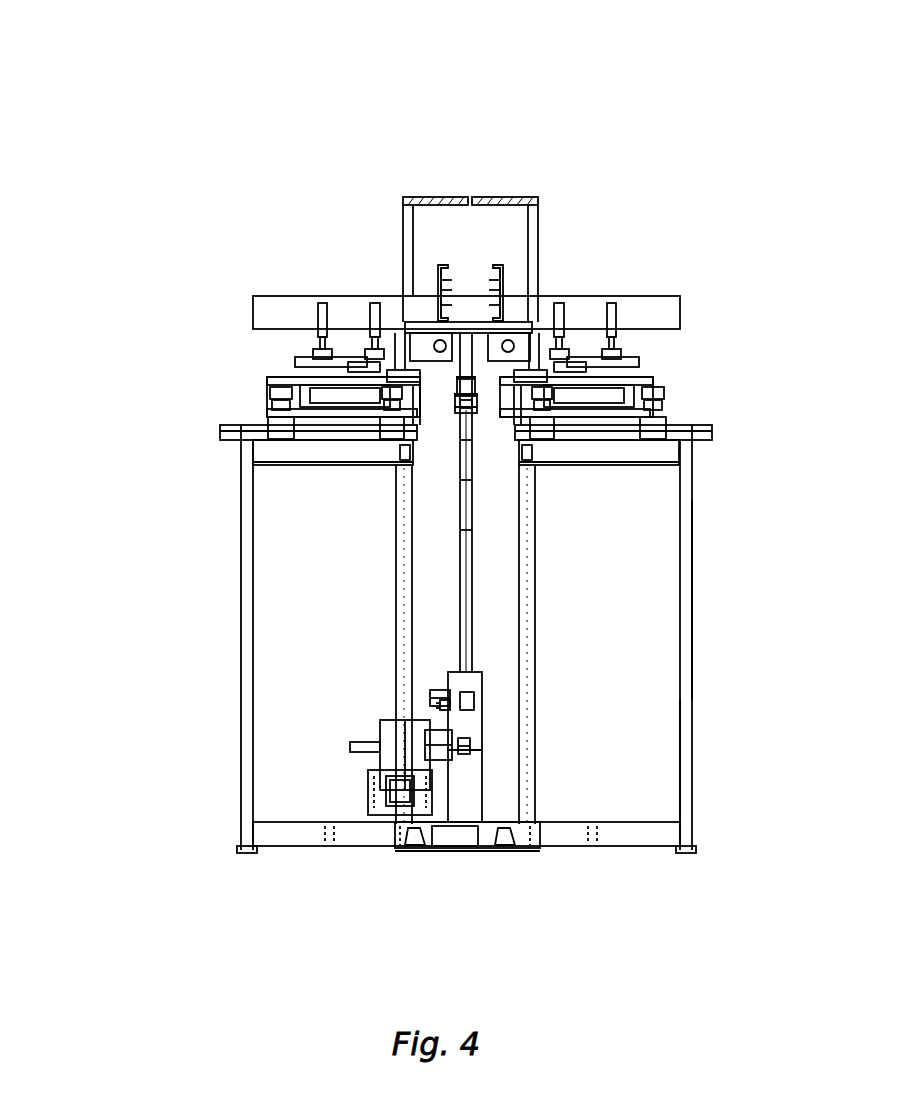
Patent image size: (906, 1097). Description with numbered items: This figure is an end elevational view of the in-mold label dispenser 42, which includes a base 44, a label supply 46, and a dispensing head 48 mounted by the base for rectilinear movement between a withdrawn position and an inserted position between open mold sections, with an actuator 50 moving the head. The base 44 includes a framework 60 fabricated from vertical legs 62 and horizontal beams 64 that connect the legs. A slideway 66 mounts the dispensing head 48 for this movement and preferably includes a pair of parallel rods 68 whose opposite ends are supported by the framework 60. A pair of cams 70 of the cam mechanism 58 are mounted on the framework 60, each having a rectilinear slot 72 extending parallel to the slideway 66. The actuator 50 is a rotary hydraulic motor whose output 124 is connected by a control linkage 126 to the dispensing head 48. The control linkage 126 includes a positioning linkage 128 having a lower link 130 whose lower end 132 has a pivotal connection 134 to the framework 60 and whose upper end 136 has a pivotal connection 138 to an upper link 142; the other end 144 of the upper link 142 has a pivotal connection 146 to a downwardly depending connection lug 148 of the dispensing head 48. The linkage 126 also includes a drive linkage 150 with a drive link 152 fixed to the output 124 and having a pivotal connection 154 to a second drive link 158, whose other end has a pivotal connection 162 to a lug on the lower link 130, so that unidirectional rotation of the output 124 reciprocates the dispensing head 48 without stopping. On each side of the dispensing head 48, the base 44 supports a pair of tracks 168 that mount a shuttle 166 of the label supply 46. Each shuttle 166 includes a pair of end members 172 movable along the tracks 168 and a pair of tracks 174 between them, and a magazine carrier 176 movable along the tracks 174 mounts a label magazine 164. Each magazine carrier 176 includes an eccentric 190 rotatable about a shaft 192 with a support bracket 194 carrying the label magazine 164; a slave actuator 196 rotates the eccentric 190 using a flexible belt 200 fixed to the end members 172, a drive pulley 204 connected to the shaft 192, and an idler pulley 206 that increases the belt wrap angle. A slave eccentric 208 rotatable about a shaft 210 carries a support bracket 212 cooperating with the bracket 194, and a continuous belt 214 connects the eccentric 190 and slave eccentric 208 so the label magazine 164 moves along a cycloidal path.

The in-mold label dispenser 42 is at (704, 160).
The base 44 is at (700, 720).
The label supply 46 is at (236, 136).
The dispensing head 48 is at (434, 340).
The actuator 50 is at (420, 745).
The cam mechanism 58 is at (516, 176).
The framework 60 is at (700, 610).
The vertical legs 62 is at (396, 618).
The horizontal beams 64 is at (340, 447).
The slideway 66 is at (392, 330).
The parallel rods 68 is at (423, 308).
The cam 70 is at (424, 198).
The cam slot 72 is at (455, 206).
The actuator output 124 is at (395, 720).
The control linkage 126 is at (486, 632).
The positioning linkage 128 is at (456, 413).
The lower link 130 is at (465, 535).
The lower end of lower link 132 is at (482, 810).
The pivotal connection 134 is at (497, 851).
The upper end of lower link 136 is at (462, 495).
The pivotal connection 138 is at (460, 455).
The upper link 142 is at (540, 320).
The other end of upper link 144 is at (449, 362).
The pivotal connection 146 is at (456, 377).
The connection lug 148 is at (463, 392).
The drive linkage 150 is at (490, 698).
The drive link 152 is at (450, 714).
The pivotal connection 154 is at (438, 702).
The drive link 158 is at (452, 742).
The pivotal connection 162 is at (472, 752).
The label magazine 164 is at (276, 386).
The shuttle 166 is at (360, 420).
The tracks 168 is at (372, 425).
The end members 172 is at (350, 418).
The tracks 174 is at (347, 415).
The magazine carrier 176 is at (335, 411).
The eccentric 190 is at (398, 340).
The shaft 192 is at (395, 425).
The support bracket 194 is at (420, 348).
The slave actuator 196 is at (330, 417).
The flexible belt 200 is at (345, 382).
The drive pulley 204 is at (375, 420).
The idler pulley 206 is at (260, 402).
The slave eccentric 208 is at (288, 372).
The shaft 210 is at (290, 438).
The support bracket 212 is at (330, 400).
The continuous belt 214 is at (298, 362).